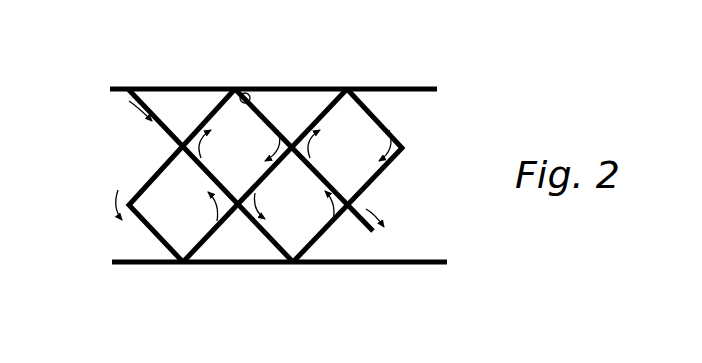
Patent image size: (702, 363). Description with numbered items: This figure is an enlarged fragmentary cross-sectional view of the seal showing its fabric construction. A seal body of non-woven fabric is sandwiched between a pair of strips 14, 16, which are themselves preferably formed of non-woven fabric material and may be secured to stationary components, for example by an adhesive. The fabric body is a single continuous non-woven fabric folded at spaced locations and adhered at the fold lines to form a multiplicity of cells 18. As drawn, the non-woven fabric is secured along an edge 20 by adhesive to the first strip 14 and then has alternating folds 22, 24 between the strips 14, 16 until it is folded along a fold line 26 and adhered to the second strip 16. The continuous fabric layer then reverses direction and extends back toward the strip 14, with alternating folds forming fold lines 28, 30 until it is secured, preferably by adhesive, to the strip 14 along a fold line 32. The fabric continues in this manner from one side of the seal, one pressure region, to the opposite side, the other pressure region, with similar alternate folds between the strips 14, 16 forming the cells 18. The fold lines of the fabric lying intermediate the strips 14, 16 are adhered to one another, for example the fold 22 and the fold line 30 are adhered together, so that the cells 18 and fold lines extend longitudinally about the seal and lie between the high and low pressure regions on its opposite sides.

The strip 14 is at (397, 87).
The strip 16 is at (373, 265).
The cells 18 is at (347, 147).
The edge 20 is at (128, 97).
The fold 22 is at (181, 148).
The fold 24 is at (131, 222).
The fold line 26 is at (160, 263).
The fold line 28 is at (231, 210).
The fold line 30 is at (183, 147).
The fold line 32 is at (254, 91).